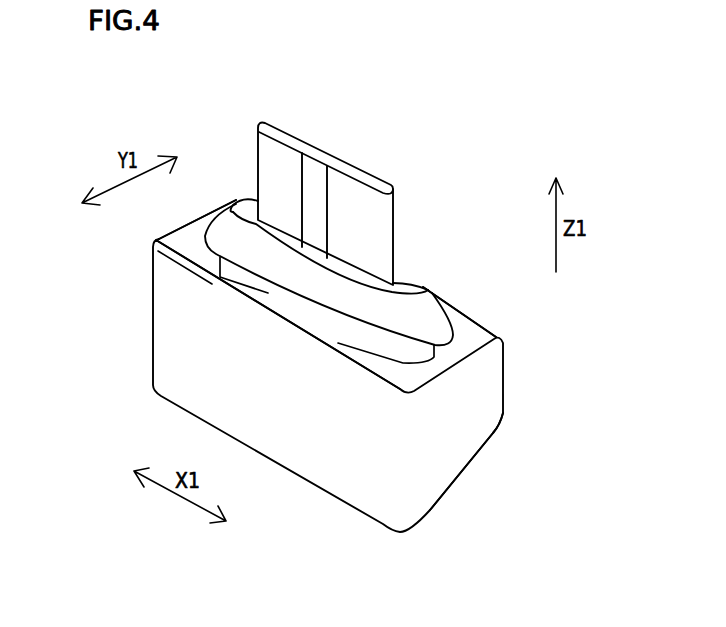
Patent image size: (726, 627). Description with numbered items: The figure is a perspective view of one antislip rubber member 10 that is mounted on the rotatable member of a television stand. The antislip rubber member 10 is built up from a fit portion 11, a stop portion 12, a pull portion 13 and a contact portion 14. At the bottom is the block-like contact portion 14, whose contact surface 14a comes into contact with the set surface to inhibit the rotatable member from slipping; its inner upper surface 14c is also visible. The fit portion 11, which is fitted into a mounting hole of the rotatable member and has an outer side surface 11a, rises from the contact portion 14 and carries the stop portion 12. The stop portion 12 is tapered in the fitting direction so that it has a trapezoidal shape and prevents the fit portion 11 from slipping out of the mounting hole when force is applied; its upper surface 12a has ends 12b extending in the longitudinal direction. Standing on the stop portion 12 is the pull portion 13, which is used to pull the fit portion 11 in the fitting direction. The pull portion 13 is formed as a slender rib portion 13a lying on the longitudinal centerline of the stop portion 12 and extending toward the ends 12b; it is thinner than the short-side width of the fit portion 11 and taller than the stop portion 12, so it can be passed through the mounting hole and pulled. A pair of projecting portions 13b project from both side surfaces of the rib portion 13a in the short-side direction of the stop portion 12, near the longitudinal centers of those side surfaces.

The antislip rubber member 10 is at (416, 129).
The fit portion 11 is at (160, 236).
The outer side surface 11a is at (317, 324).
The stop portion 12 is at (433, 318).
The upper surface 12a is at (405, 280).
The ends 12b is at (238, 203).
The pull portion 13 is at (320, 152).
The rib portion 13a is at (272, 146).
The projecting portions 13b is at (334, 154).
The contact portion 14 is at (473, 408).
The contact surface 14a is at (463, 472).
The inner upper surface 14c is at (180, 264).